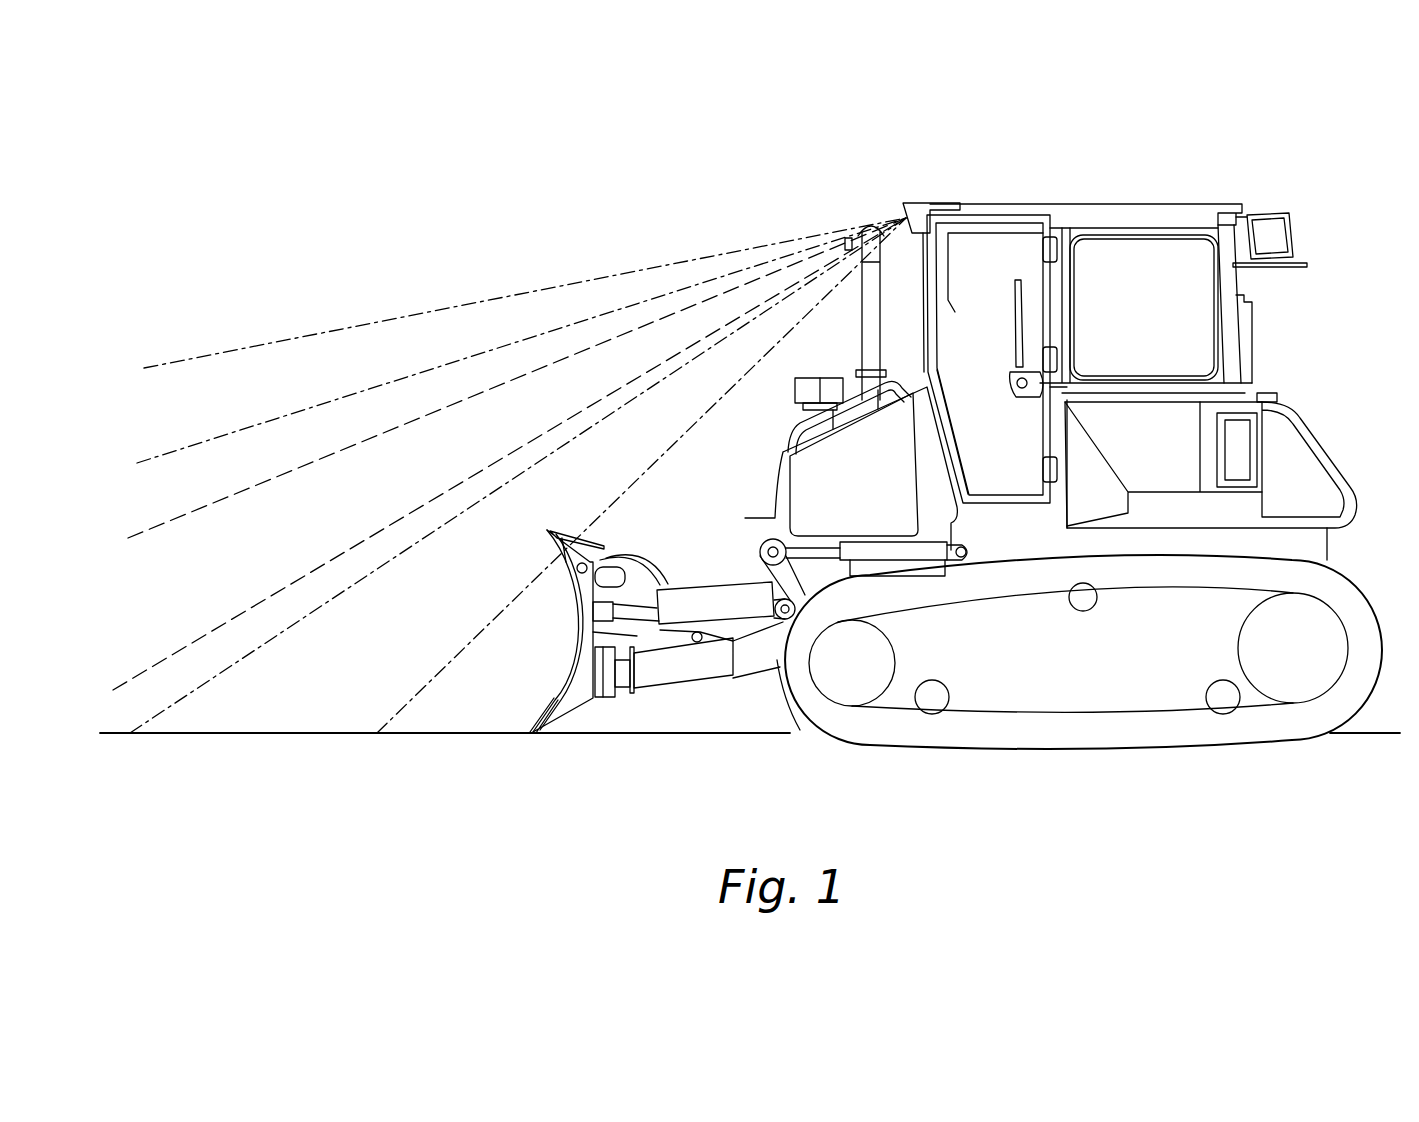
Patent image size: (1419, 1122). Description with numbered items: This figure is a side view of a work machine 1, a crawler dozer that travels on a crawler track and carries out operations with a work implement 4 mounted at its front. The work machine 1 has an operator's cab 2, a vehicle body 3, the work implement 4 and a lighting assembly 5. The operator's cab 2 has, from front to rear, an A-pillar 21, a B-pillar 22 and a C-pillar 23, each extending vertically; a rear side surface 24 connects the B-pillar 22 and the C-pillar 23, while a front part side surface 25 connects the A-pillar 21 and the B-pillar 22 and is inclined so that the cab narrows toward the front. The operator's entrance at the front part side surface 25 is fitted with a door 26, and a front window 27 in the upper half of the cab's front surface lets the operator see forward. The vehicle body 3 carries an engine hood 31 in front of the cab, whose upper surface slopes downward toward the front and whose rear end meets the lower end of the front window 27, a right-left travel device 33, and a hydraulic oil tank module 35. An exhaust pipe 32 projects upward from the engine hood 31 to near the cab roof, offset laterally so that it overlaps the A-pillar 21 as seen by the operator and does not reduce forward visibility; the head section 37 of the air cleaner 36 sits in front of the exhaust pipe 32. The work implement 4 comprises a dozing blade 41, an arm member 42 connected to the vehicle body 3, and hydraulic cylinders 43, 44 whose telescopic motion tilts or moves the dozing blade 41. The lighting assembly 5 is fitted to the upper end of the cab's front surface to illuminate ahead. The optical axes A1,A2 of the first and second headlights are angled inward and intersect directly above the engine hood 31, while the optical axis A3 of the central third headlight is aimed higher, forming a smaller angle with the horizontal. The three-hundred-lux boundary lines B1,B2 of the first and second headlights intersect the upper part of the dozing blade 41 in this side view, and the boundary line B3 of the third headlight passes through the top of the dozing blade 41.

The work machine 1 is at (672, 227).
The operator's cab 2 is at (1138, 196).
The vehicle body 3 is at (1360, 553).
The work implement 4 is at (663, 707).
The lighting assembly 5 is at (898, 190).
The A-pillar 21 is at (930, 270).
The B-pillar 22 is at (1057, 280).
The C-pillar 23 is at (1228, 311).
The rear side surface 24 is at (1150, 285).
The front part side surface 25 is at (990, 315).
The door 26 is at (997, 455).
The front window 27 is at (868, 325).
The engine hood 31 is at (782, 487).
The exhaust pipe 32 is at (917, 284).
The travel device 33 is at (1100, 683).
The hydraulic oil tank module 35 is at (1305, 450).
The air cleaner 36 is at (783, 412).
The head section 37 is at (825, 380).
The dozing blade 41 is at (573, 657).
The arm member 42 is at (725, 670).
The hydraulic cylinder 43 is at (693, 607).
The hydraulic cylinder 44 is at (825, 555).
The optical axes of the first and second headlights A1,A2 is at (310, 576).
The optical axis of the third headlight A3 is at (268, 485).
The boundary lines of 300 lux illumination B1,B2 is at (258, 428).
The boundary line of 300 lux illumination B3 is at (262, 340).